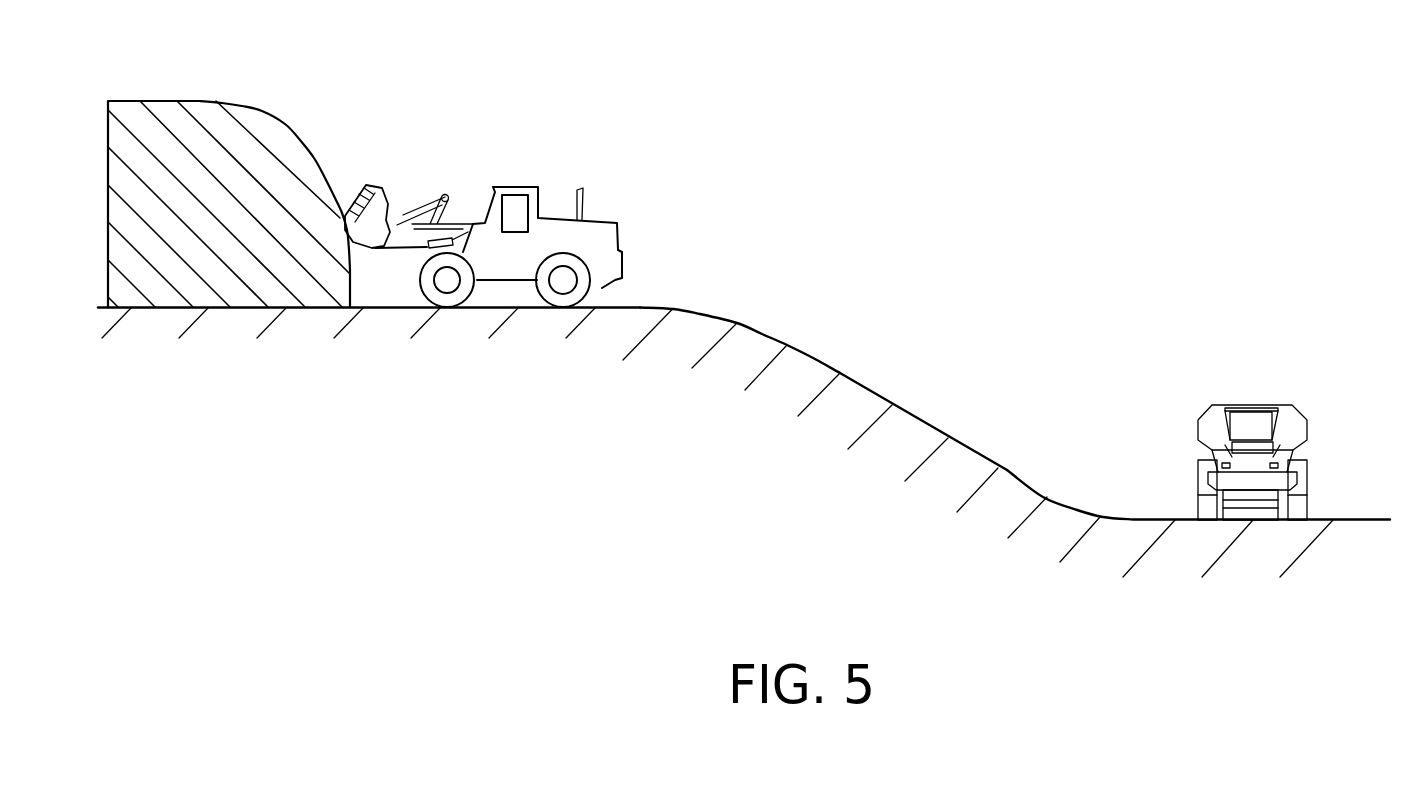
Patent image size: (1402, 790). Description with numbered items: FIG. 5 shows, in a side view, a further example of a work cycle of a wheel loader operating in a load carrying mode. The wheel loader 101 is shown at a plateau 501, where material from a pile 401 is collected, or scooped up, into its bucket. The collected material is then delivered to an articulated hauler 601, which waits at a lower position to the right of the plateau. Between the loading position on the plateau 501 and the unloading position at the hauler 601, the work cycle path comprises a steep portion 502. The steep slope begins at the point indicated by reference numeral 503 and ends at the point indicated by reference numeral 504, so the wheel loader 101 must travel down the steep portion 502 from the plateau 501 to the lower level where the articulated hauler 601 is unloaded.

The pile of material 401 is at (167, 101).
The wheel loader machine 101 is at (650, 160).
The plateau 501 is at (383, 308).
The finishing point of the steep slope 504 is at (692, 308).
The steep portion 502 is at (872, 388).
The starting point of the steep slope 503 is at (1075, 502).
The articulated hauler 601 is at (1277, 372).